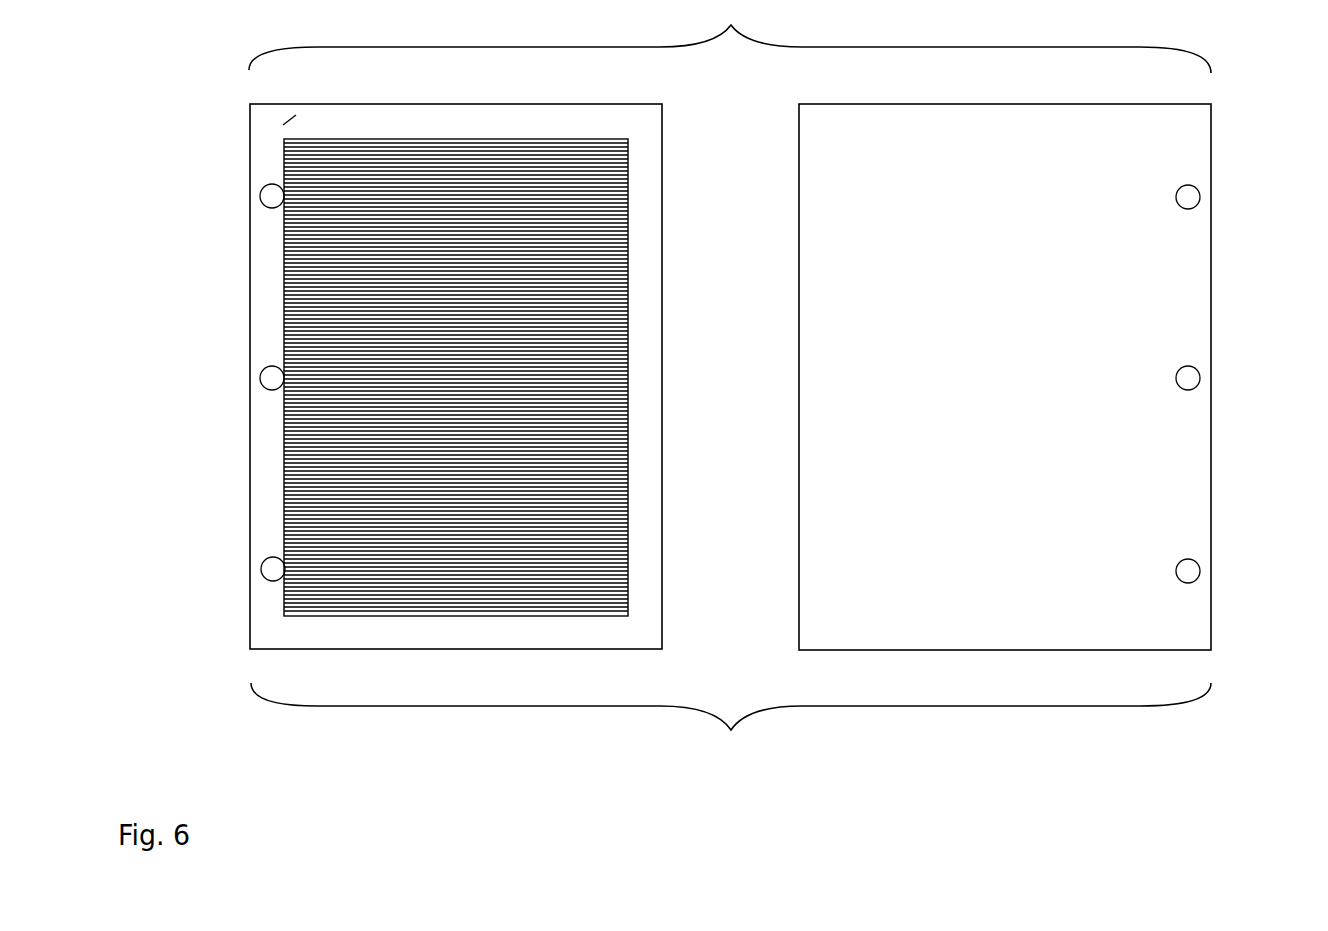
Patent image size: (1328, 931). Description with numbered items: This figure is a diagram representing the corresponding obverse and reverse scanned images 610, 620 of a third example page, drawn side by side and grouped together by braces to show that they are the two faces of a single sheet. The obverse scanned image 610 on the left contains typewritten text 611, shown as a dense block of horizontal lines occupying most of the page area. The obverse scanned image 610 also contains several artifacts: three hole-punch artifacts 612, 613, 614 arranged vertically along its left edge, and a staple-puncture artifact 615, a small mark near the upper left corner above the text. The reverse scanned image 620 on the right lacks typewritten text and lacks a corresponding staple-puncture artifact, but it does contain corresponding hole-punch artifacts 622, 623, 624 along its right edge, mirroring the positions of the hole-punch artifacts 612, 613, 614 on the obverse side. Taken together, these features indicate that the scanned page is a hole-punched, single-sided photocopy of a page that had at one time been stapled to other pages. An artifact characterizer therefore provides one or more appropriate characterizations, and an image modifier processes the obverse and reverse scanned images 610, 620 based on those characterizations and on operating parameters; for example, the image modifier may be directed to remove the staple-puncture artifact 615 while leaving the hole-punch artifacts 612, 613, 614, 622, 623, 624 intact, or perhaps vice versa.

The obverse scanned image 610 is at (663, 309).
The typewritten text 611 is at (628, 197).
The hole-punch artifact 612 is at (265, 186).
The hole-punch artifact 613 is at (263, 370).
The hole-punch artifact 614 is at (264, 563).
The staple-puncture artifact 615 is at (272, 141).
The reverse scanned image 620 is at (1212, 310).
The hole-punch artifact 622 is at (1200, 197).
The hole-punch artifact 623 is at (1200, 378).
The hole-punch artifact 624 is at (1200, 571).